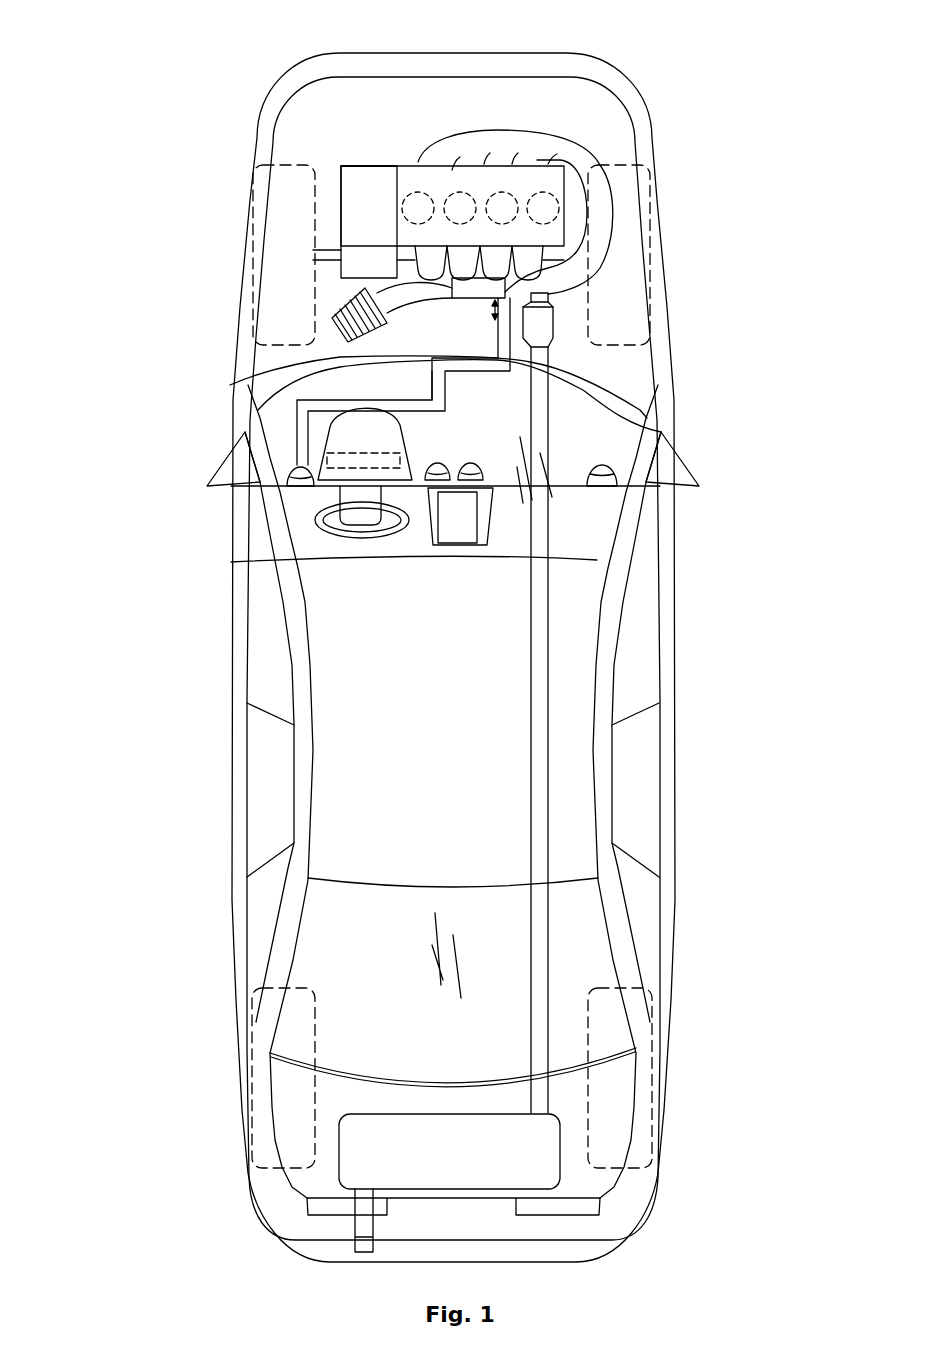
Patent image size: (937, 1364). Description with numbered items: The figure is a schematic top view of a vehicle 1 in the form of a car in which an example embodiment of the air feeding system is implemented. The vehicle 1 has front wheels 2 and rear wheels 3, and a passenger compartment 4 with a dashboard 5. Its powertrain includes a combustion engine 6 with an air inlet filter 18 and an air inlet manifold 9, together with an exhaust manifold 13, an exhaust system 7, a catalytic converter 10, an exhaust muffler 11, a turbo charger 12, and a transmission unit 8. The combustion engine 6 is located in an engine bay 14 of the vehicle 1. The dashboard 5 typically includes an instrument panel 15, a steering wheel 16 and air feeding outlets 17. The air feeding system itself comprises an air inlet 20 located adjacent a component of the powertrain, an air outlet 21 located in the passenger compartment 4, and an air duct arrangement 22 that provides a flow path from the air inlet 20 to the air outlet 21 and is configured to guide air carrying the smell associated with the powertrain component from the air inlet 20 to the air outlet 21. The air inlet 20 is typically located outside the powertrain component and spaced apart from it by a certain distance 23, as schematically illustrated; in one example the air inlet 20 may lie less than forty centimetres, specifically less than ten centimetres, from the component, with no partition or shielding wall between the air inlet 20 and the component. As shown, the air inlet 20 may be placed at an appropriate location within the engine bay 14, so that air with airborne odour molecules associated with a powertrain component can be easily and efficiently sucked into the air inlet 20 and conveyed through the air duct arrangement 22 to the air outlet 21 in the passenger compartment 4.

The vehicle 1 is at (48, 8).
The front wheels 2 is at (280, 244).
The rear wheels 3 is at (282, 1100).
The passenger compartment 4 is at (377, 733).
The dashboard 5 is at (417, 440).
The combustion engine 6 is at (418, 232).
The exhaust system 7 is at (540, 687).
The transmission unit 8 is at (362, 183).
The air inlet manifold 9 is at (505, 140).
The catalytic converter 10 is at (545, 322).
The exhaust muffler 11 is at (363, 1165).
The turbo charger 12 is at (500, 340).
The exhaust manifold 13 is at (497, 260).
The engine bay 14 is at (380, 157).
The instrument panel 15 is at (348, 465).
The steering wheel 16 is at (327, 530).
The air feeding outlets 17 is at (627, 583).
The air inlet filter 18 is at (348, 318).
The air inlet 20 is at (560, 366).
The air outlet 21 is at (292, 465).
The air duct arrangement 22 is at (445, 390).
The distance 23 is at (500, 310).